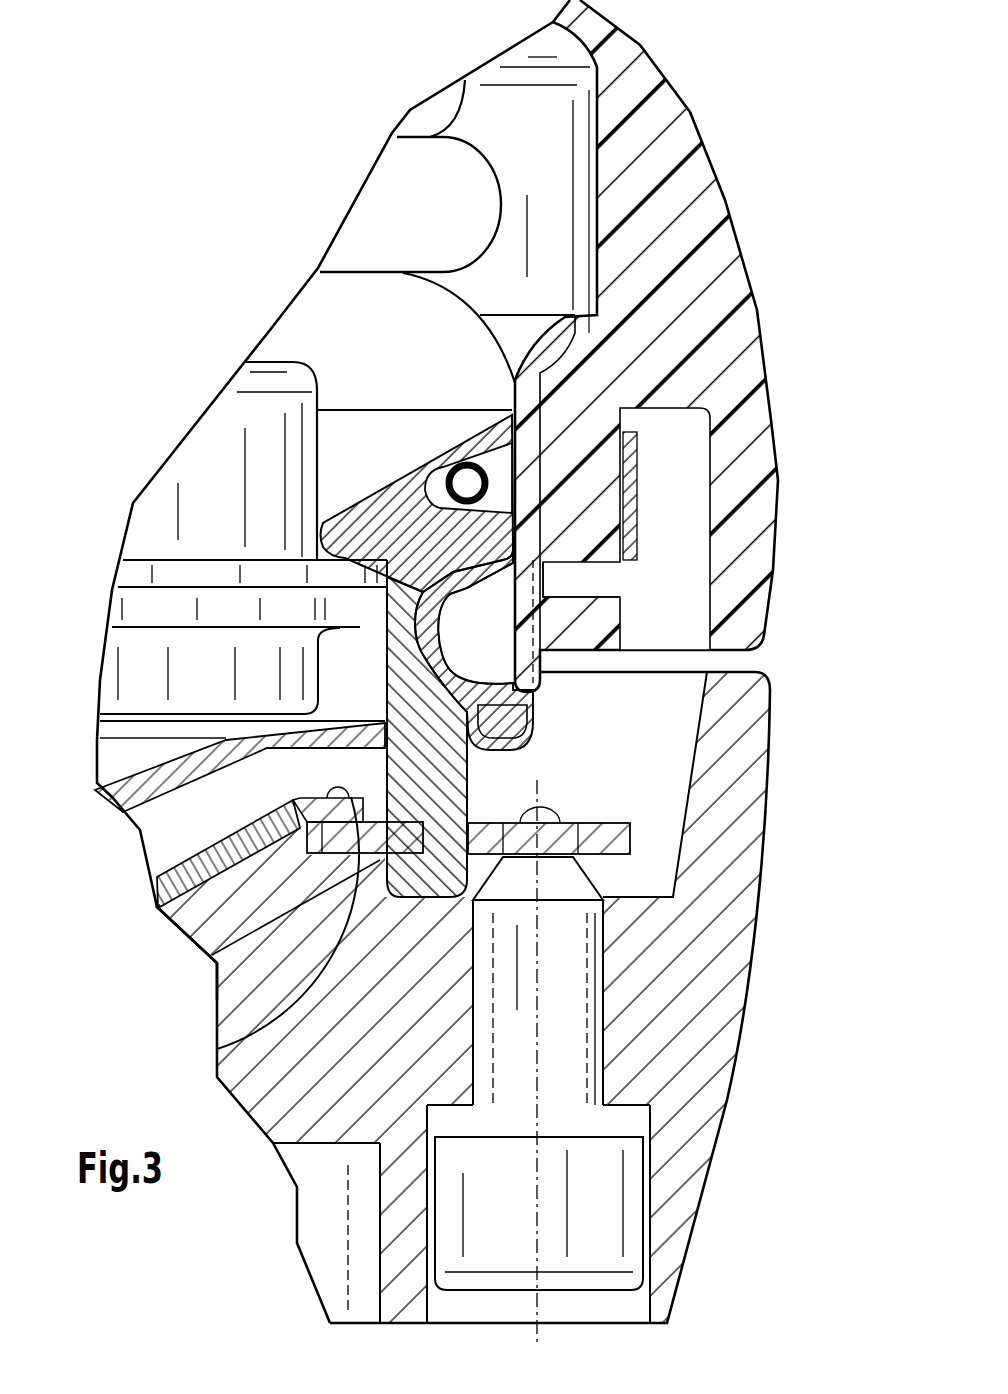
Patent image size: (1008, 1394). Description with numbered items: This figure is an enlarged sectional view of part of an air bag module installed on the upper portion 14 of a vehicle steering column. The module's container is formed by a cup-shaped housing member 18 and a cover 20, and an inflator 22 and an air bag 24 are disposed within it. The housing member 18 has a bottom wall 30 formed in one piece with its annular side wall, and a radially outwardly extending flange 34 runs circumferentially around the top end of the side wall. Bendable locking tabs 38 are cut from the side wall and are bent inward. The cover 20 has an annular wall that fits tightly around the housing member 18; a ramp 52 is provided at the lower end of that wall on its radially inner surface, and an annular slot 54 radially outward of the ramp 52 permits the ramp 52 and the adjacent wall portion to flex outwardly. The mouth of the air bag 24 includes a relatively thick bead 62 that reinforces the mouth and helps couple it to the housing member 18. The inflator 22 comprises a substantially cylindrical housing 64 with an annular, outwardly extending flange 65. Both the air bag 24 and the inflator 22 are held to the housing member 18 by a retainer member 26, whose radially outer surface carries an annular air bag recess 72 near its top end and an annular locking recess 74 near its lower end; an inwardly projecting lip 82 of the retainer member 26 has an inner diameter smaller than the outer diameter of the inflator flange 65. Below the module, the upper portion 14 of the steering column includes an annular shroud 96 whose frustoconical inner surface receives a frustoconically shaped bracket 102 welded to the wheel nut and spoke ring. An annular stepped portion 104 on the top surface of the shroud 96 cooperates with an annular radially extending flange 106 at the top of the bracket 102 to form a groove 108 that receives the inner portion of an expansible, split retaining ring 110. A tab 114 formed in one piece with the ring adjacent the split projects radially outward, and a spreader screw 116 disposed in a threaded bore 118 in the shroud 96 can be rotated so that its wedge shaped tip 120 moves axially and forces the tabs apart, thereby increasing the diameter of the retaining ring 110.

The upper portion of the steering column 14 is at (747, 1073).
The cup-shaped housing member 18 is at (507, 373).
The cover 20 is at (673, 62).
The inflator 22 is at (318, 477).
The air bag 24 is at (393, 222).
The retainer member 26 is at (467, 775).
The bottom wall 30 is at (177, 777).
The radially outwardly extending flange 34 is at (573, 313).
The bendable locking tabs 38 is at (522, 630).
The ramp 52 is at (468, 568).
The annular slot 54 is at (687, 488).
The bead 62 is at (435, 477).
The inflator housing 64 is at (202, 493).
The flange of the inflator housing 65 is at (377, 580).
The annular air bag recess 72 is at (500, 502).
The annular locking recess 74 is at (497, 655).
The inwardly projecting lip 82 is at (340, 567).
The shroud 96 is at (703, 933).
The bracket 102 is at (183, 863).
The annular stepped portion 104 is at (207, 947).
The annular radially extending flange 106 is at (223, 1053).
The groove 108 is at (288, 797).
The expansible retaining ring 110 is at (467, 797).
The tab 114 is at (607, 827).
The spreader screw 116 is at (519, 1226).
The threaded bore 118 is at (603, 1000).
The wedge shaped tip 120 is at (575, 880).